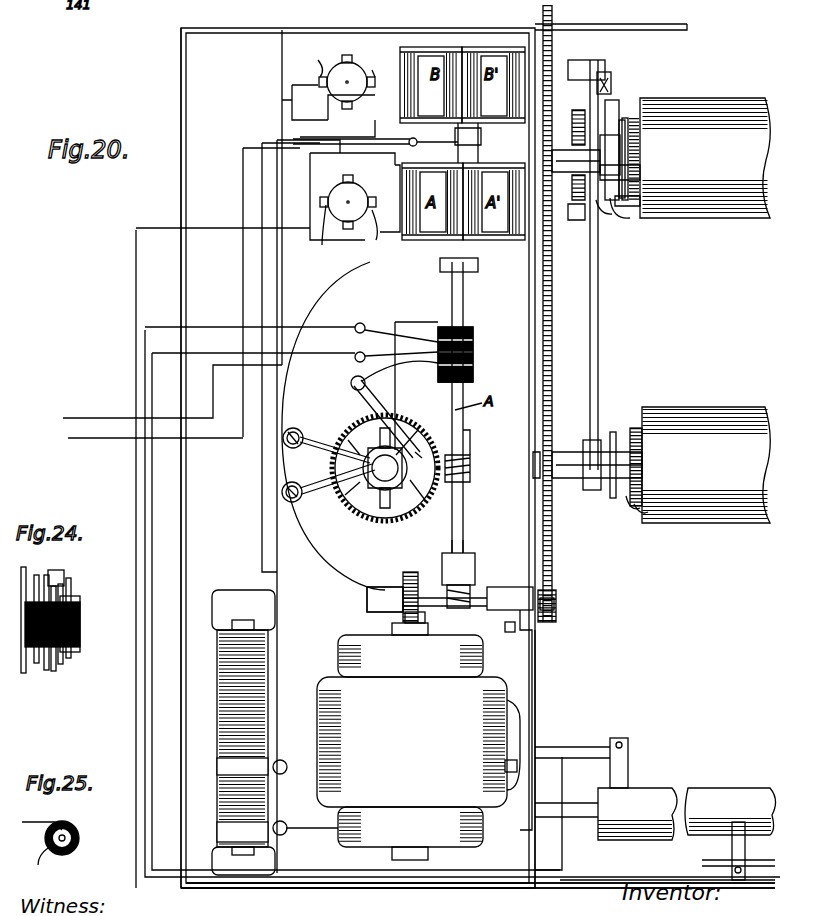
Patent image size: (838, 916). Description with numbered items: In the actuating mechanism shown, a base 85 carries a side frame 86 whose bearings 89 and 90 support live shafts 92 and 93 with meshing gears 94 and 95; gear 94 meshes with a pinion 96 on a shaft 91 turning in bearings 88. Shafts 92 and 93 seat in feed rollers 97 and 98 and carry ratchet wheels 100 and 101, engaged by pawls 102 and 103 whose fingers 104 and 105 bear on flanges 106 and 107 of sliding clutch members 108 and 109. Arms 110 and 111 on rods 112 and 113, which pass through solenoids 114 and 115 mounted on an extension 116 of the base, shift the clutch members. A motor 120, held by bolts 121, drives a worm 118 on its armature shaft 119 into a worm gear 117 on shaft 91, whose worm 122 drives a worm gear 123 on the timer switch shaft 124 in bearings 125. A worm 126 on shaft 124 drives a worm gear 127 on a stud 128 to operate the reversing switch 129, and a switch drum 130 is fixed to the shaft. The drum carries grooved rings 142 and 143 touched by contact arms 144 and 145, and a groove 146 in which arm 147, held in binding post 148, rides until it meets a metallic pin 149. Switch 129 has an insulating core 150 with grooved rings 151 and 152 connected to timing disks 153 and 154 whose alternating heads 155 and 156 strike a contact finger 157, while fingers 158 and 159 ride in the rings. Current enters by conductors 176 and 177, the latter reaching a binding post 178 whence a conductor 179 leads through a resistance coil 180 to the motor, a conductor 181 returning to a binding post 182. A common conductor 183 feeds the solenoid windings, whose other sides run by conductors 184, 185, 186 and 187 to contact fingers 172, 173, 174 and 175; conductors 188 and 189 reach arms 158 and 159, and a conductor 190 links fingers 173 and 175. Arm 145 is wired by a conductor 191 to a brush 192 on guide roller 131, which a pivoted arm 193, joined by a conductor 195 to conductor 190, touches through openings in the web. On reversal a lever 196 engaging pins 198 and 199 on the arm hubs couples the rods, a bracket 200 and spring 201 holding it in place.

In FIG. 20, the base 85 is at (475, 885).
In FIG. 20, the side frame 86 is at (540, 644).
In FIG. 20, the bearing 88 is at (388, 586).
In FIG. 20, the bearing 89 is at (532, 468).
In FIG. 20, the bearing 90 is at (482, 140).
In FIG. 20, the shaft 91 is at (478, 606).
In FIG. 20, the live shaft 92 is at (565, 480).
In FIG. 20, the live shaft 93 is at (560, 150).
In FIG. 20, the gear 94 is at (556, 548).
In FIG. 20, the gear 95 is at (572, 220).
In FIG. 20, the pinion 96 is at (556, 604).
In FIG. 20, the feed roller 97 is at (704, 406).
In FIG. 20, the feed roller 98 is at (690, 218).
In FIG. 20, the ratchet wheel 100 is at (634, 428).
In FIG. 20, the ratchet wheel 101 is at (632, 122).
In FIG. 20, the pawl 102 is at (636, 512).
In FIG. 20, the pawl 103 is at (640, 206).
In FIG. 20, the finger 104 is at (625, 505).
In FIG. 20, the finger 105 is at (640, 180).
In FIG. 20, the annular flange 106 is at (614, 432).
In FIG. 20, the annular flange 107 is at (615, 118).
In FIG. 20, the clutch member 108 is at (602, 440).
In FIG. 20, the clutch member 109 is at (635, 219).
In FIG. 20, the arm 110 is at (599, 258).
In FIG. 20, the arm 111 is at (612, 74).
In FIG. 20, the rod 112 is at (553, 250).
In FIG. 20, the rod 113 is at (560, 75).
In FIG. 20, the solenoid 114 is at (403, 218).
In FIG. 20, the solenoid 115 is at (401, 76).
In FIG. 20, the extension 116 is at (184, 190).
In FIG. 20, the worm gear 117 is at (428, 570).
In FIG. 20, the worm 118 is at (398, 612).
In FIG. 20, the armature shaft 119 is at (426, 616).
In FIG. 20, the electric motor 120 is at (412, 742).
In FIG. 20, the bolt 121 is at (500, 700).
In FIG. 20, the worm 122 is at (462, 636).
In FIG. 20, the worm gear 123 is at (480, 556).
In FIG. 20, the timer switch shaft 124 is at (464, 500).
In FIG. 20, the bearing 125 is at (470, 272).
In FIG. 20, the worm 126 is at (472, 458).
In FIG. 20, the worm gear 127 is at (470, 440).
In FIG. 20, the stud 128 is at (384, 444).
In FIG. 20, the reversing switch 129 is at (366, 480).
In FIG. 20, the switch drum 130 is at (474, 374).
In FIG. 25, the switch drum 130 is at (80, 836).
In FIG. 20, the idling roller 131 is at (724, 790).
In FIG. 20, the grooved ring 142 is at (474, 340).
In FIG. 20, the grooved ring 143 is at (462, 326).
In FIG. 20, the resilient contact arm 144 is at (398, 348).
In FIG. 20, the resilient contact arm 145 is at (378, 325).
In FIG. 20, the groove 146 is at (474, 356).
In FIG. 25, the groove 146 is at (70, 826).
In FIG. 20, the resilient contact arm 147 is at (400, 370).
In FIG. 20, the insulated binding post 148 is at (350, 388).
In FIG. 25, the metallic pin 149 is at (38, 862).
In FIG. 24, the core 150 is at (82, 612).
In FIG. 24, the grooved metallic ring 151 is at (46, 670).
In FIG. 24, the grooved metallic ring 152 is at (70, 656).
In FIG. 20, the timing disk 153 is at (378, 486).
In FIG. 24, the timing disk 153 is at (56, 672).
In FIG. 20, the timing disk 154 is at (392, 504).
In FIG. 24, the timing disk 154 is at (62, 666).
In FIG. 20, the radial contact head 155 is at (418, 490).
In FIG. 20, the radial contact head 156 is at (424, 432).
In FIG. 20, the resilient contact finger 157 is at (418, 448).
In FIG. 24, the resilient contact finger 157 is at (70, 566).
In FIG. 20, the resilient contact finger 158 is at (326, 446).
In FIG. 24, the resilient contact finger 158 is at (38, 580).
In FIG. 20, the resilient contact finger 159 is at (322, 478).
In FIG. 24, the resilient contact finger 159 is at (74, 583).
In FIG. 20, the resilient contact finger 172 is at (348, 55).
In FIG. 20, the resilient contact finger 173 is at (320, 70).
In FIG. 20, the resilient contact finger 174 is at (344, 176).
In FIG. 20, the resilient contact finger 175 is at (322, 245).
In FIG. 20, the conductor 176 is at (96, 416).
In FIG. 20, the conductor 177 is at (106, 440).
In FIG. 20, the binding post 178 is at (420, 145).
In FIG. 20, the conductor 179 is at (265, 497).
In FIG. 20, the resistance coil 180 is at (268, 680).
In FIG. 20, the conductor 181 is at (153, 676).
In FIG. 20, the binding post 182 is at (357, 352).
In FIG. 20, the common conductor 183 is at (493, 86).
In FIG. 20, the conductor 184 is at (372, 96).
In FIG. 20, the conductor 185 is at (433, 86).
In FIG. 20, the conductor 186 is at (392, 166).
In FIG. 20, the conductor 187 is at (399, 184).
In FIG. 20, the conductor 188 is at (282, 100).
In FIG. 20, the conductor 189 is at (262, 282).
In FIG. 20, the conductor 190 is at (293, 106).
In FIG. 20, the conductor 191 is at (564, 865).
In FIG. 20, the insulated brush 192 is at (628, 760).
In FIG. 20, the insulated pivoted arm 193 is at (746, 852).
In FIG. 20, the conductor 195 is at (616, 882).
In FIG. 20, the lever 196 is at (575, 200).
In FIG. 20, the pin 198 is at (600, 215).
In FIG. 20, the pin 199 is at (612, 82).
In FIG. 20, the bracket 200 is at (575, 112).
In FIG. 20, the coiled spring 201 is at (640, 158).